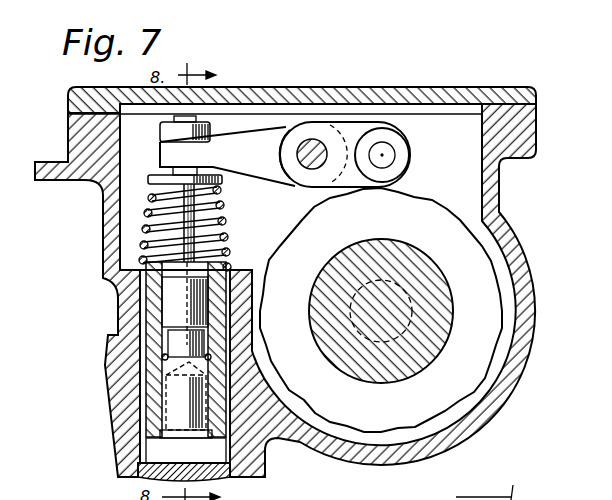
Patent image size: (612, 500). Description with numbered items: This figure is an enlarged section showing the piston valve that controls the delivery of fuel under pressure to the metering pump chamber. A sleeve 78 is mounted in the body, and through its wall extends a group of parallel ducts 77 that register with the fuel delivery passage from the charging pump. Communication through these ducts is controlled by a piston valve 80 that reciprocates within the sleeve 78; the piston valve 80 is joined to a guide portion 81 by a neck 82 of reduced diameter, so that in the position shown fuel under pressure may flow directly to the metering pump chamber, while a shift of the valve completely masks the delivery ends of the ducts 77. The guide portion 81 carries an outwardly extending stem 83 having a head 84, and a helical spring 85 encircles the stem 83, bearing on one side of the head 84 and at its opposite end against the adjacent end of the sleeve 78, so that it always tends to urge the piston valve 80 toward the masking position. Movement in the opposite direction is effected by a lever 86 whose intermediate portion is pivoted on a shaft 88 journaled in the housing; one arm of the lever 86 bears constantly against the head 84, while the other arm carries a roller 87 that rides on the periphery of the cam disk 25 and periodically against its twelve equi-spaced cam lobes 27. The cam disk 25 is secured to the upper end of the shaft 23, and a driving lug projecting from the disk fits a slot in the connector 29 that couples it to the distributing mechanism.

The shaft 23 is at (392, 350).
The cam disk 25 is at (405, 205).
The cam lobes 27 is at (486, 200).
The connector 29 is at (425, 321).
The duct group 77 is at (170, 357).
The sleeve 78 is at (146, 424).
The piston valve 80 is at (168, 394).
The guide portion 81 is at (175, 293).
The neck 82 is at (182, 337).
The stem 83 is at (183, 233).
The head 84 is at (221, 181).
The helical spring 85 is at (230, 219).
The lever 86 is at (260, 130).
The roller 87 is at (408, 142).
The shaft 88 is at (320, 146).